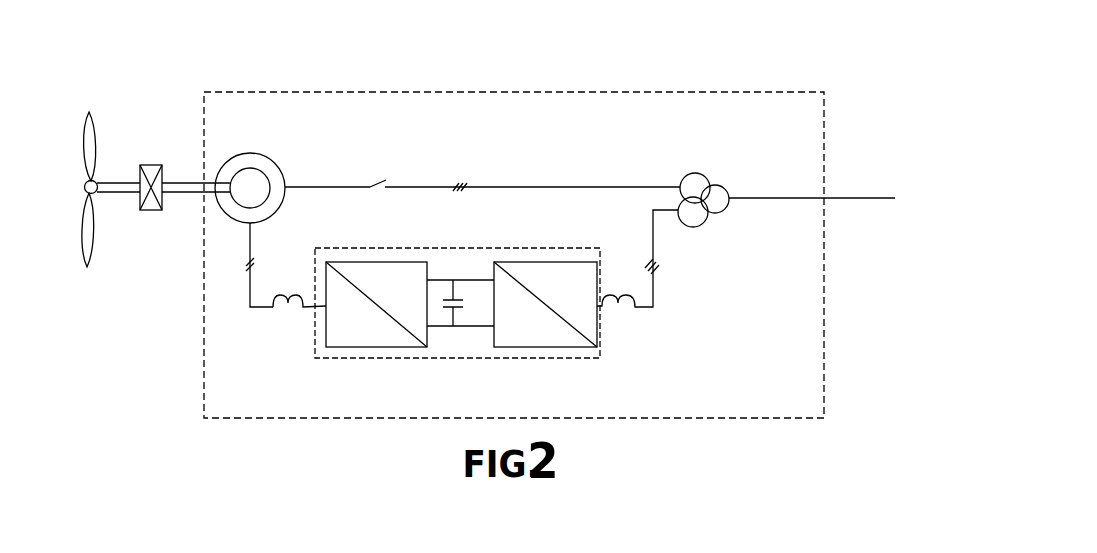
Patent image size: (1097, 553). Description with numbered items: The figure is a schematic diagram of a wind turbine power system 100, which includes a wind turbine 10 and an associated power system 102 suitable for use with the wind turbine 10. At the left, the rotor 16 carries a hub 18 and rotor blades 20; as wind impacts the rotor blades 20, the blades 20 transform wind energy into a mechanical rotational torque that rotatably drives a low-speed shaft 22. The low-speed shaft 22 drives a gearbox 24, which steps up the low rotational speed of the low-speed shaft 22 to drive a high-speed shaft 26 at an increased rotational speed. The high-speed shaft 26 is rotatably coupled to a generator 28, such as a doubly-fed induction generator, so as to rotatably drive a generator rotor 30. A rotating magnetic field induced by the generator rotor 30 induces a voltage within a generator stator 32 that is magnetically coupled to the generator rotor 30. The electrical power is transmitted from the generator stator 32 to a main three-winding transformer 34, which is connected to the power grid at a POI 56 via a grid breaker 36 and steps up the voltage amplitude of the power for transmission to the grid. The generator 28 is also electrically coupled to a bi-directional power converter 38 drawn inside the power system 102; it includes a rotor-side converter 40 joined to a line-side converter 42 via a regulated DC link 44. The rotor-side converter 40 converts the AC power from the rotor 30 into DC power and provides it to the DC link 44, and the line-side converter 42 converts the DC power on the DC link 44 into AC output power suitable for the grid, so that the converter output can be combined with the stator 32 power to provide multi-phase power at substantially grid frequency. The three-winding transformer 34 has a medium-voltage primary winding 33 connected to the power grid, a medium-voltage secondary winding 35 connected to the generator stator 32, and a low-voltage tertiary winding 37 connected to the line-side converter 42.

The wind turbine 10 is at (85, 177).
The rotor 16 is at (73, 193).
The rotor hub 18 is at (83, 183).
The rotor blades 20 is at (92, 137).
The low-speed shaft 22 is at (109, 194).
The gearbox 24 is at (149, 165).
The high-speed shaft 26 is at (176, 194).
The generator 28 is at (250, 166).
The generator rotor 30 is at (265, 173).
The generator stator 32 is at (243, 224).
The primary winding 33 is at (717, 216).
The three-winding transformer 34 is at (718, 181).
The secondary winding 35 is at (680, 184).
The grid breaker 36 is at (779, 192).
The tertiary winding 37 is at (700, 228).
The bi-directional power converter 38 is at (457, 306).
The rotor-side converter 40 is at (365, 349).
The line-side converter 42 is at (553, 349).
The DC link 44 is at (467, 317).
The POI 56 is at (892, 210).
The wind turbine power system 100 is at (841, 56).
The power system 102 is at (509, 91).